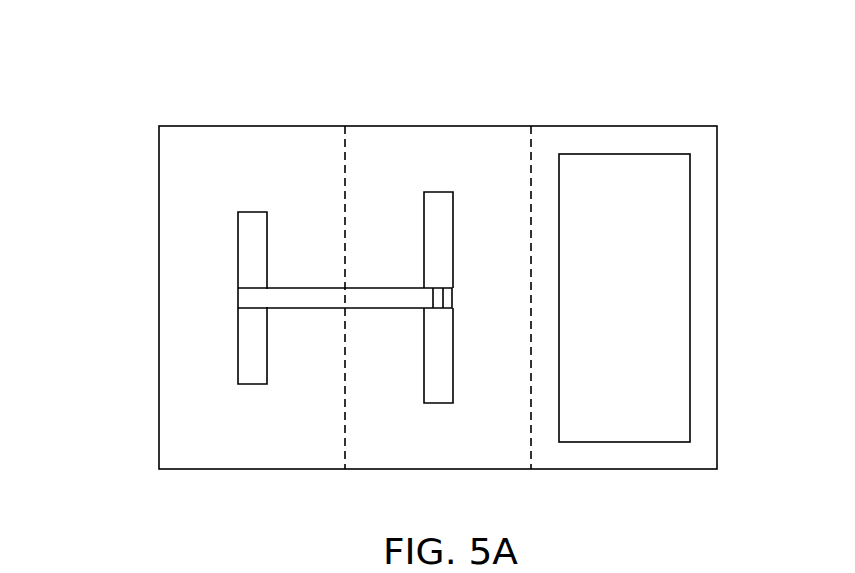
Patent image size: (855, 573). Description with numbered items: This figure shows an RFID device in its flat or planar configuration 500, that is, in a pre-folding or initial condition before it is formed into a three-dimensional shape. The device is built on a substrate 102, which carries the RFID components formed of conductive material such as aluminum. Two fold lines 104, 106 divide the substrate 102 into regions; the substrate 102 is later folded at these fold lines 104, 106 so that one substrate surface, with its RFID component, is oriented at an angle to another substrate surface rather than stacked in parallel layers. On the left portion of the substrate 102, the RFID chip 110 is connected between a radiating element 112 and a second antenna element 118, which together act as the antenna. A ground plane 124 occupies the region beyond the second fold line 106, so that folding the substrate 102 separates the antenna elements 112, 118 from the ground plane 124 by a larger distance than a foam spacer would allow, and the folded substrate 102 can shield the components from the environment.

The flat or planar configuration 500 is at (128, 96).
The substrate 102 is at (159, 268).
The fold line 104 is at (347, 141).
The fold line 106 is at (533, 143).
The RFID chip 110 is at (445, 298).
The radiating element 112 is at (453, 356).
The antenna element 118 is at (238, 347).
The ground plane 124 is at (690, 187).